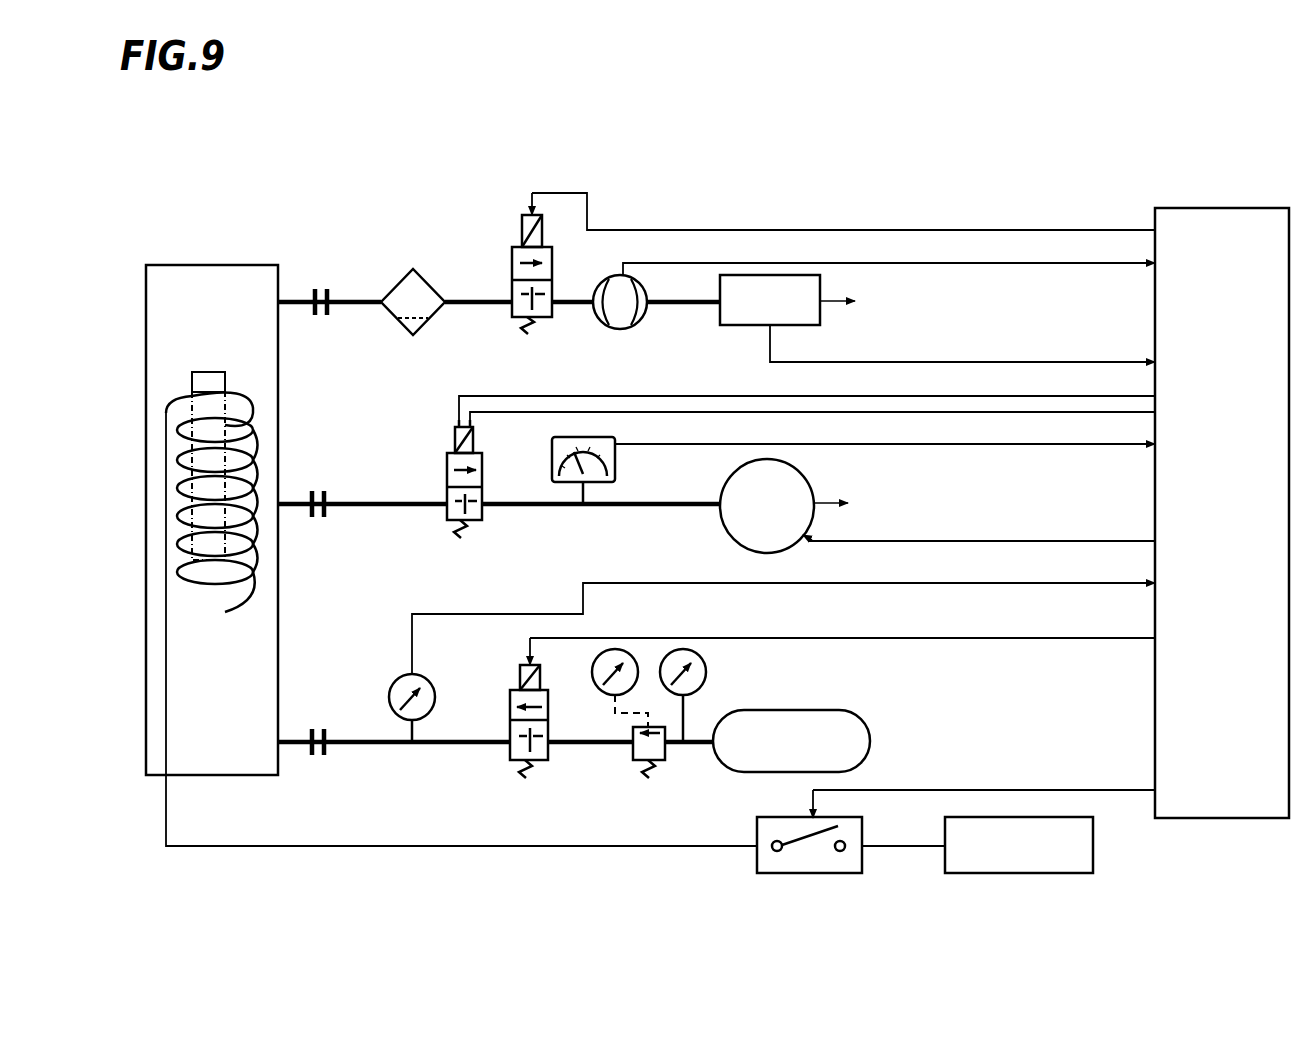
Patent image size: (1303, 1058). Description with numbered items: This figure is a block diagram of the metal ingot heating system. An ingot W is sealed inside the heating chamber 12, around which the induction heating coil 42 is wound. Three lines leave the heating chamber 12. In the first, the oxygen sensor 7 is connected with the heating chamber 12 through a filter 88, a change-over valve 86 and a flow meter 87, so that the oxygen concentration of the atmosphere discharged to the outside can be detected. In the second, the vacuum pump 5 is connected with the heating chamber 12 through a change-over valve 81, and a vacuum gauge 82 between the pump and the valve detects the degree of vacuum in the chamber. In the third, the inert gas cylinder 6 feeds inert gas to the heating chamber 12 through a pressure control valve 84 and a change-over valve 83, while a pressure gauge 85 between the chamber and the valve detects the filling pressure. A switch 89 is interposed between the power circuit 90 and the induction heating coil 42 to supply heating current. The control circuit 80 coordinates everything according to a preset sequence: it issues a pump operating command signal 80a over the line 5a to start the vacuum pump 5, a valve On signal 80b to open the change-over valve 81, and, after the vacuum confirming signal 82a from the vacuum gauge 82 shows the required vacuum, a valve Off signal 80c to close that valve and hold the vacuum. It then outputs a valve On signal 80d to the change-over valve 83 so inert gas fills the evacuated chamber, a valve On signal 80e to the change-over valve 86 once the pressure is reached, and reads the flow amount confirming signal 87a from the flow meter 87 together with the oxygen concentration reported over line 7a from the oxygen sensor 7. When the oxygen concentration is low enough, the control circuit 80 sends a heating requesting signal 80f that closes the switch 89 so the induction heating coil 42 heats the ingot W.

The heating chamber 12 is at (240, 265).
The ingot W is at (192, 382).
The induction heating coil 42 is at (172, 413).
The filter 88 is at (427, 288).
The change-over valve 86 is at (512, 305).
The flow meter 87 is at (620, 330).
The oxygen sensor 7 is at (820, 290).
The control circuit 80 is at (1225, 208).
The valve On signal 80e is at (1000, 230).
The flow amount confirming signal 87a is at (1040, 265).
The oxygen sensor signal 7a is at (1000, 362).
The valve Off signal 80c is at (664, 396).
The valve On signal 80b is at (875, 412).
The vacuum confirming signal 82a is at (1030, 444).
The pump operating command signal 80a is at (1005, 541).
The vacuum pump signal line 5a is at (865, 583).
The valve On signal 80d is at (1012, 638).
The heating requesting signal 80f is at (1000, 790).
The change-over valve 81 is at (447, 515).
The vacuum gauge 82 is at (615, 455).
The vacuum pump 5 is at (810, 476).
The pressure gauge 85 is at (428, 680).
The change-over valve 83 is at (508, 755).
The pressure control valve 84 is at (630, 755).
The inert gas cylinder 6 is at (820, 712).
The switch 89 is at (797, 873).
The power circuit 90 is at (1020, 873).